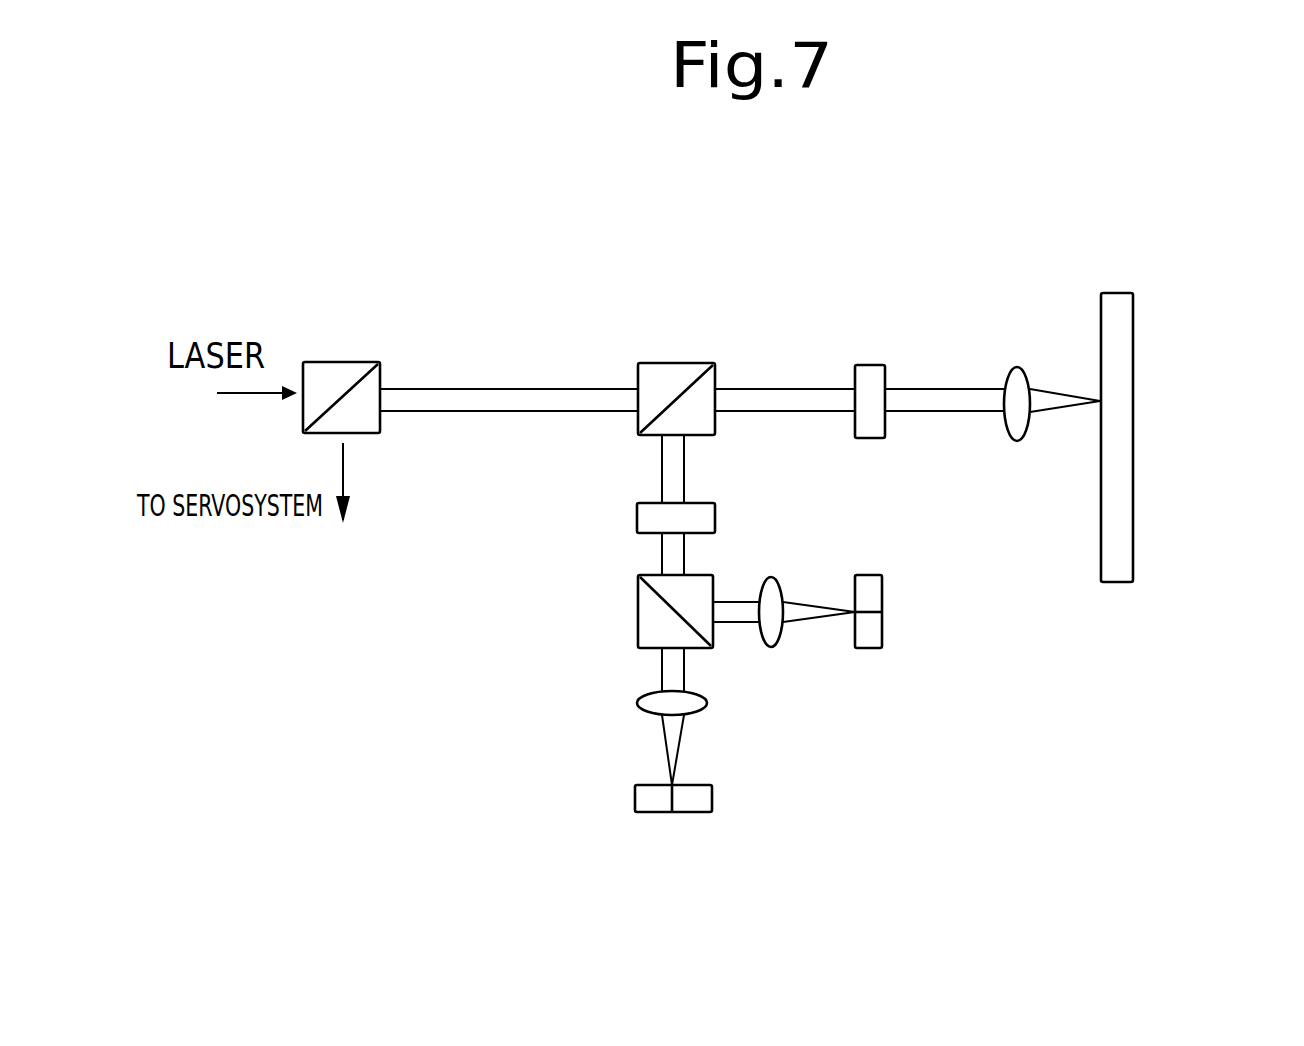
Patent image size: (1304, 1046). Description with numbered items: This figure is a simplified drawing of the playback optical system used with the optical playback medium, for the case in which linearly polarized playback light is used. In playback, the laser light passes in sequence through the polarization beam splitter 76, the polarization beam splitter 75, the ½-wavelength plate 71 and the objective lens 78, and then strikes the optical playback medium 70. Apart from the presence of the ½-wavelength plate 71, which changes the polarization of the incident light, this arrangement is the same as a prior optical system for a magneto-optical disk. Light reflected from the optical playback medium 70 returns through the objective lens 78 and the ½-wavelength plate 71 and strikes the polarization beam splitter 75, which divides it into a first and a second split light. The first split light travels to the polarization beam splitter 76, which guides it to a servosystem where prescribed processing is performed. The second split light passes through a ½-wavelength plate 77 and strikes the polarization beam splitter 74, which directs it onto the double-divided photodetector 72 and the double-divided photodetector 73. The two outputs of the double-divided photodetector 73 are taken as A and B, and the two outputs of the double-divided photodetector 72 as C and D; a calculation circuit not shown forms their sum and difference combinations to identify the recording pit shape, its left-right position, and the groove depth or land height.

The optical playback medium 70 is at (1110, 293).
The ½-wavelength plate 71 is at (868, 365).
The double-divided photodetector 72 is at (868, 648).
The double-divided photodetector 73 is at (692, 812).
The polarization beam splitter 74 is at (638, 608).
The polarization beam splitter 75 is at (645, 362).
The polarization beam splitter 76 is at (358, 362).
The ½-wavelength plate 77 is at (637, 518).
The objective lens 78 is at (1008, 442).